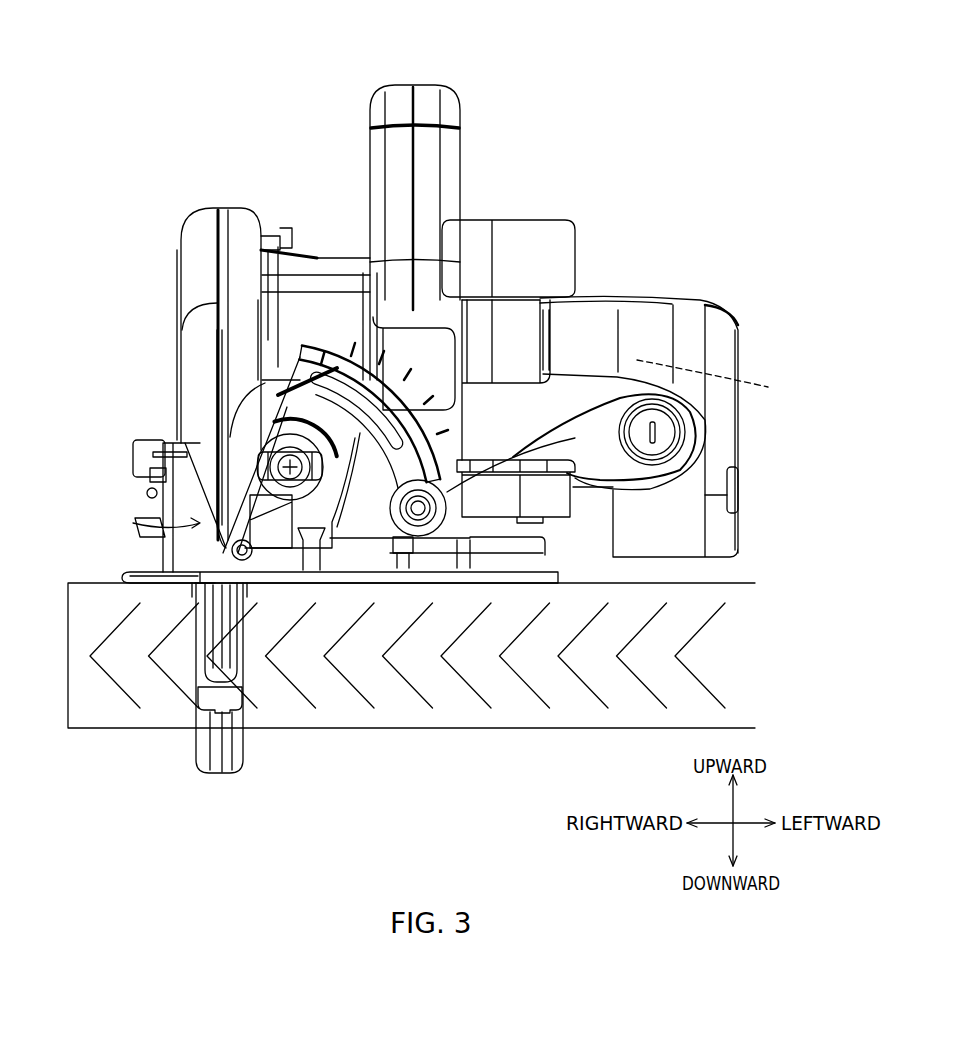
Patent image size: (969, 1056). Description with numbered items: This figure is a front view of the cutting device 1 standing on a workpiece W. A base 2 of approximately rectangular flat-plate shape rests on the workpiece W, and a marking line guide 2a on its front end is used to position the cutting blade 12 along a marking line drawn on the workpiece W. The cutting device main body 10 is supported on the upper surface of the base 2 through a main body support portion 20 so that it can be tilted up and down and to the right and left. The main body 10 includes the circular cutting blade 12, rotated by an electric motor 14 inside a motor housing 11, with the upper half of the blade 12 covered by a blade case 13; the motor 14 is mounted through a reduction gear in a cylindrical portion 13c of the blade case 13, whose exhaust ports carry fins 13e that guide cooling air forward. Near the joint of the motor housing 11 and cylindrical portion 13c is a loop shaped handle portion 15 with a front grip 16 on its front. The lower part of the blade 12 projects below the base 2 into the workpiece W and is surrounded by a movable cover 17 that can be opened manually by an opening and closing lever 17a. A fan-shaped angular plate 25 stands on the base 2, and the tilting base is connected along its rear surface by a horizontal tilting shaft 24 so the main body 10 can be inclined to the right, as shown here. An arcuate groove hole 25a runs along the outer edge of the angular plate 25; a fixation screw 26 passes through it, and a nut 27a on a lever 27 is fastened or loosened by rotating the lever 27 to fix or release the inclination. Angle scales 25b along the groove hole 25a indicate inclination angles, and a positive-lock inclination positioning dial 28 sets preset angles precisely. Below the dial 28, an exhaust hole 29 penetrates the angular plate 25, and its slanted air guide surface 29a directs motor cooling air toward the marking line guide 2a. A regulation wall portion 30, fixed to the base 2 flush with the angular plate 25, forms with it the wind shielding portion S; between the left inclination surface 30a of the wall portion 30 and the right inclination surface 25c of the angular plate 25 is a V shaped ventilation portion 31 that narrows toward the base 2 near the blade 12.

The cutting device 1 is at (524, 126).
The base 2 is at (127, 573).
The marking line guide 2a is at (232, 628).
The cutting device main body 10 is at (335, 214).
The motor housing 11 is at (688, 350).
The cutting blade 12 is at (207, 727).
The blade case 13 is at (200, 228).
The cylindrical portion 13c is at (320, 313).
The fin 13e is at (285, 338).
The electric motor 14 is at (716, 381).
The handle portion 15 is at (432, 100).
The front grip 16 is at (535, 227).
The movable cover 17 is at (210, 773).
The opening and closing lever 17a is at (143, 452).
The main body support portion 20 is at (366, 541).
The horizontal tilting shaft 24 is at (233, 693).
The angular plate 25 is at (443, 425).
The groove hole 25a is at (393, 445).
The angle scales 25b is at (386, 412).
The right inclination surface 25c is at (246, 440).
The fixation screw 26 is at (407, 512).
The lever 27 is at (482, 483).
The nut 27a is at (400, 560).
The inclination positioning dial 28 is at (258, 460).
The exhaust hole 29 is at (285, 565).
The air guide surface 29a is at (272, 585).
The regulation wall portion 30 is at (133, 523).
The left inclination surface 30a is at (207, 468).
The ventilation portion 31 is at (210, 598).
The wind shielding portion S is at (205, 395).
The workpiece W is at (702, 597).